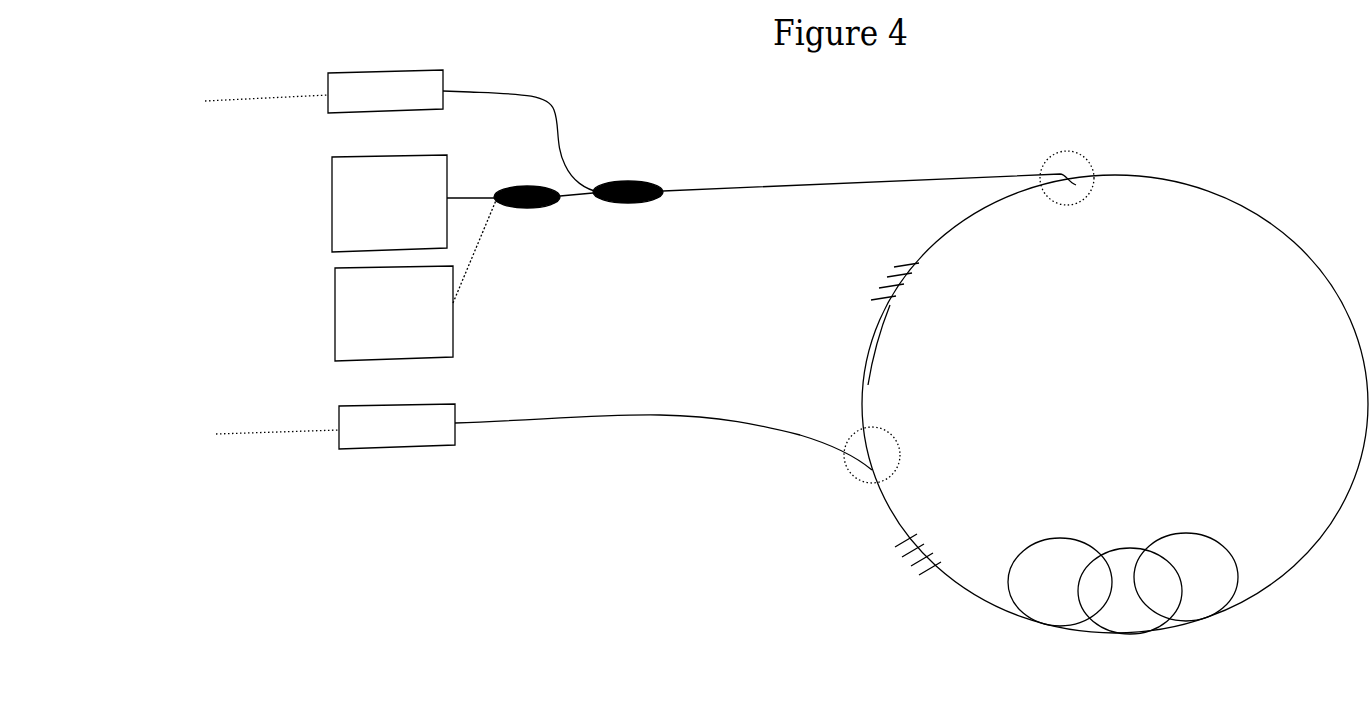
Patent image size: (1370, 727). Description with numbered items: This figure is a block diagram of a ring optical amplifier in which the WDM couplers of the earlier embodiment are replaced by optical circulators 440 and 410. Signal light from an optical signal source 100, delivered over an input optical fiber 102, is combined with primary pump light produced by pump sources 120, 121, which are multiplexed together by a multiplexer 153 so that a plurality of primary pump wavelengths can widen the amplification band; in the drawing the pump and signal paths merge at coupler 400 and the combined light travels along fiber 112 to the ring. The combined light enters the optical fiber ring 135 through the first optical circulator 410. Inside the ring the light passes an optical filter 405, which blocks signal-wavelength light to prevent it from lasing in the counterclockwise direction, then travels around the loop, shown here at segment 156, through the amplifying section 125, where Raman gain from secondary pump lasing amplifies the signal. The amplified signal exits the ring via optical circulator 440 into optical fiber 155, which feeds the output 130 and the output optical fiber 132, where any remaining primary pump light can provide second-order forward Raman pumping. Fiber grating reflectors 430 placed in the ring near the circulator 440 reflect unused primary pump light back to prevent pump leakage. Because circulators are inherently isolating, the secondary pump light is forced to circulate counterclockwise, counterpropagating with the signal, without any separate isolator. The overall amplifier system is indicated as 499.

The optical signal source 100 is at (362, 70).
The input optical fiber 102 is at (226, 102).
The pump source 120 is at (331, 218).
The pump source 121 is at (335, 323).
The multiplexer 153 is at (517, 211).
The wavelength division multiplexer coupler 400 is at (650, 160).
The input optical fiber 112 is at (896, 179).
The first optical circulator 410 is at (1058, 151).
The optical fiber ring 135 is at (1261, 216).
The optical filter 405 is at (921, 301).
The fiber loop segment 156 is at (881, 331).
The optical fiber 155 is at (808, 412).
The optical circulator 440 is at (865, 488).
The fiber grating reflector 430 is at (901, 563).
The amplifying section 125 is at (1151, 535).
The output 130 is at (375, 451).
The output optical fiber 132 is at (238, 434).
The fiber laser system 499 is at (675, 599).